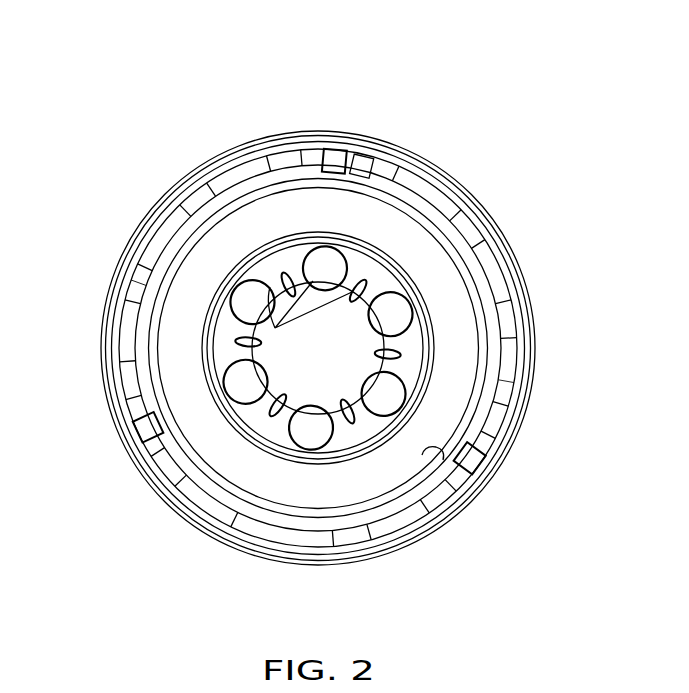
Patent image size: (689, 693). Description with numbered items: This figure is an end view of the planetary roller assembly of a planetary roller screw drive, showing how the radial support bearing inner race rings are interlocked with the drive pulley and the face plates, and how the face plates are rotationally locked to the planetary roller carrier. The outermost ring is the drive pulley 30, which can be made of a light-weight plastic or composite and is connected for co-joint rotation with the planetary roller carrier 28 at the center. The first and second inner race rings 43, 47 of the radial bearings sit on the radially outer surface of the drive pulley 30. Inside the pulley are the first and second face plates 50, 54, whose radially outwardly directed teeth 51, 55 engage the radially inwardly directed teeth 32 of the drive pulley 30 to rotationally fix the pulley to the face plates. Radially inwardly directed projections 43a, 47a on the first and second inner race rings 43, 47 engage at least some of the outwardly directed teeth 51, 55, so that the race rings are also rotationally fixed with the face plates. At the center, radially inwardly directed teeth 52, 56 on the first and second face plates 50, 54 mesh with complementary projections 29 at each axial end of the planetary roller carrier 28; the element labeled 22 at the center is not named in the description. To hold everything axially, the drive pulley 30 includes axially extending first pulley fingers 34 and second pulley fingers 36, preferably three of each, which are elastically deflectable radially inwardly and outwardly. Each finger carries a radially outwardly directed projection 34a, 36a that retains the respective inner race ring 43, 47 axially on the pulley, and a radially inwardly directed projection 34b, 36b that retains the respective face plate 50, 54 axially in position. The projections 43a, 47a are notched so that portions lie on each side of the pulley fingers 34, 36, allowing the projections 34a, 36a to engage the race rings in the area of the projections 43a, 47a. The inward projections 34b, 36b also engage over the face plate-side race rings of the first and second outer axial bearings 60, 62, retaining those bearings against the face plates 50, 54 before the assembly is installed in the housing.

The core body 22 is at (318, 347).
The planetary roller carrier 28 is at (420, 322).
The projections 29 is at (220, 386).
The drive pulley 30 is at (440, 169).
The radially inwardly directed teeth 32 is at (487, 260).
The first pulley fingers 34 is at (306, 348).
The second pulley fingers 36 is at (436, 200).
The radially outwardly directed projection 34a is at (90, 426).
The radially outwardly directed projection 36a is at (131, 422).
The radially inwardly directed projection 34b is at (467, 539).
The radially inwardly directed projection 36b is at (450, 507).
The first inner race ring 43 is at (317, 317).
The second inner race ring 47 is at (248, 158).
The radially inwardly directed projections 43a is at (332, 296).
The radially inwardly directed projections 47a is at (345, 160).
The first face plate 50 is at (321, 420).
The second face plate 54 is at (352, 440).
The radially outwardly directed teeth 51 is at (325, 342).
The radially outwardly directed teeth 55 is at (133, 284).
The radially inwardly directed teeth 52 is at (287, 429).
The radially inwardly directed teeth 56 is at (267, 413).
The first outer axial bearing 60 is at (274, 348).
The second outer axial bearing 62 is at (175, 257).